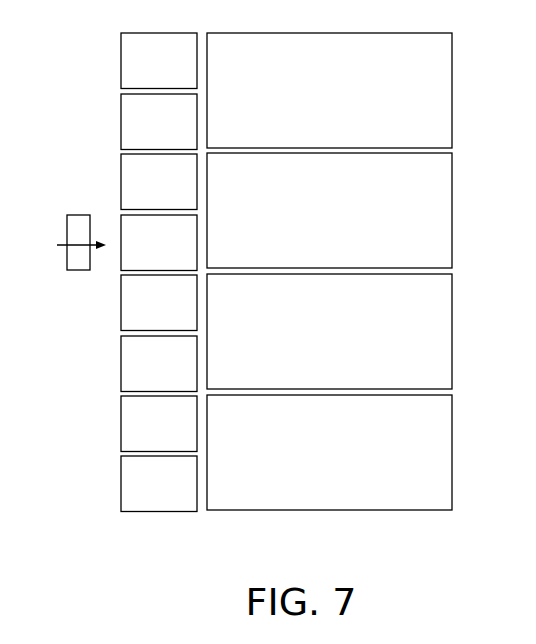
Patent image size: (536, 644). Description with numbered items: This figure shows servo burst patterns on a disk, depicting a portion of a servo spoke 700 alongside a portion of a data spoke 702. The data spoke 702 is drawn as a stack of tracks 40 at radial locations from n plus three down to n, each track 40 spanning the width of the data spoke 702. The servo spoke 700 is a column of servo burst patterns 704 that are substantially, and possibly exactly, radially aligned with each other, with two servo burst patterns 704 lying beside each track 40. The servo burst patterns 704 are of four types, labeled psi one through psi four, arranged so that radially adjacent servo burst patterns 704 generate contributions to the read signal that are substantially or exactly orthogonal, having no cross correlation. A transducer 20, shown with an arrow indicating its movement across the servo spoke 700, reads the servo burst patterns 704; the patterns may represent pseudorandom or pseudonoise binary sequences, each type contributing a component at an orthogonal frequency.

The transducer 20 is at (67, 215).
The track 40 is at (452, 91).
The servo spoke 700 is at (138, 300).
The data spoke 702 is at (347, 301).
The servo burst pattern 704 is at (121, 63).